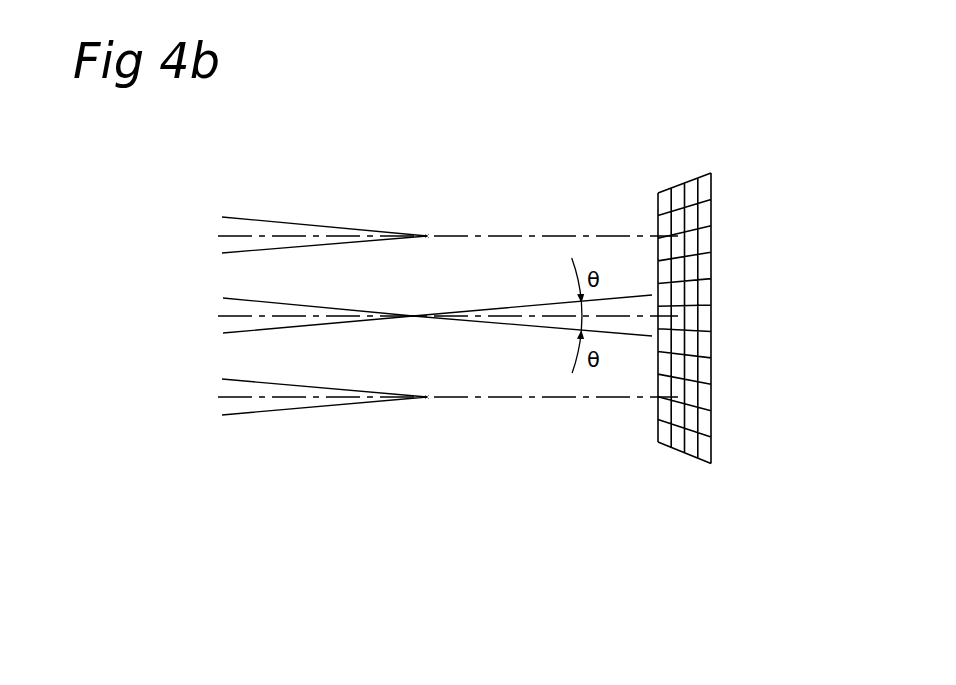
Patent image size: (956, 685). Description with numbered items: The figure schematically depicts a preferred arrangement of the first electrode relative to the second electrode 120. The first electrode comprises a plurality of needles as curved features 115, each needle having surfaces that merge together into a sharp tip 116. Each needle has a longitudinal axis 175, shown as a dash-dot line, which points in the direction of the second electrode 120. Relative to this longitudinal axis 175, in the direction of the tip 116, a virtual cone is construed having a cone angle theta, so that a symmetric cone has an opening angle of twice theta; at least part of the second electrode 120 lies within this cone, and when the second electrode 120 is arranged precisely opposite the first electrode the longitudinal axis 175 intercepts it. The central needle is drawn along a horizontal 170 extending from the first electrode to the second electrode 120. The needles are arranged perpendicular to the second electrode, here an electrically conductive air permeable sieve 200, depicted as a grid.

The curved feature 115 is at (313, 222).
The tip 116 is at (427, 236).
The horizontal 170 is at (222, 316).
The longitudinal axis 175 is at (580, 398).
The electrically conductive air permeable sieve 200 is at (676, 173).
The second electrode 120 is at (723, 287).